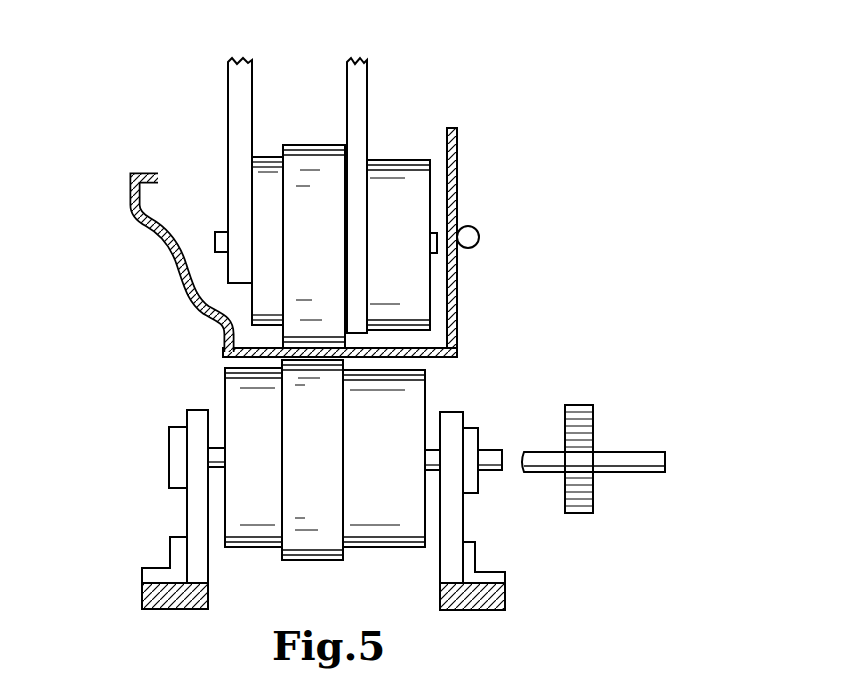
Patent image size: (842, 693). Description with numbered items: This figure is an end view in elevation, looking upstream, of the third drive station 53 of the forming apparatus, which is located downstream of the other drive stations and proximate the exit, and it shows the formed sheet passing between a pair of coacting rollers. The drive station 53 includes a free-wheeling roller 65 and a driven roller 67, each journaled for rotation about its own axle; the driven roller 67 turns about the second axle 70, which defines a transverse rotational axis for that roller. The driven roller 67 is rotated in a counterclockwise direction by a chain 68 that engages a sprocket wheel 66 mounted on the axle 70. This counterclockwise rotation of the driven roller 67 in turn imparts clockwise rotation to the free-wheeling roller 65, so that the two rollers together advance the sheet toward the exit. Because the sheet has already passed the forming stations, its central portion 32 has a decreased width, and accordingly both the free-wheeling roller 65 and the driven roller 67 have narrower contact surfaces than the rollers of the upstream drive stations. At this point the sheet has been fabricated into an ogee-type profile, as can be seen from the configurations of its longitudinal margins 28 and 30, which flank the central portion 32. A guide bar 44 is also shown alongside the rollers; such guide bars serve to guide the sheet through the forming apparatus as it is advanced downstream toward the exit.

The longitudinal margin 28 is at (457, 148).
The longitudinal margin 30 is at (160, 235).
The central portion 32 is at (377, 357).
The guide bar 44 is at (479, 237).
The third drive station 53 is at (543, 300).
The free-wheeling roller 65 is at (325, 253).
The sprocket wheel 66 is at (575, 432).
The driven roller 67 is at (320, 468).
The chain 68 is at (580, 513).
The second axle 70 is at (493, 450).